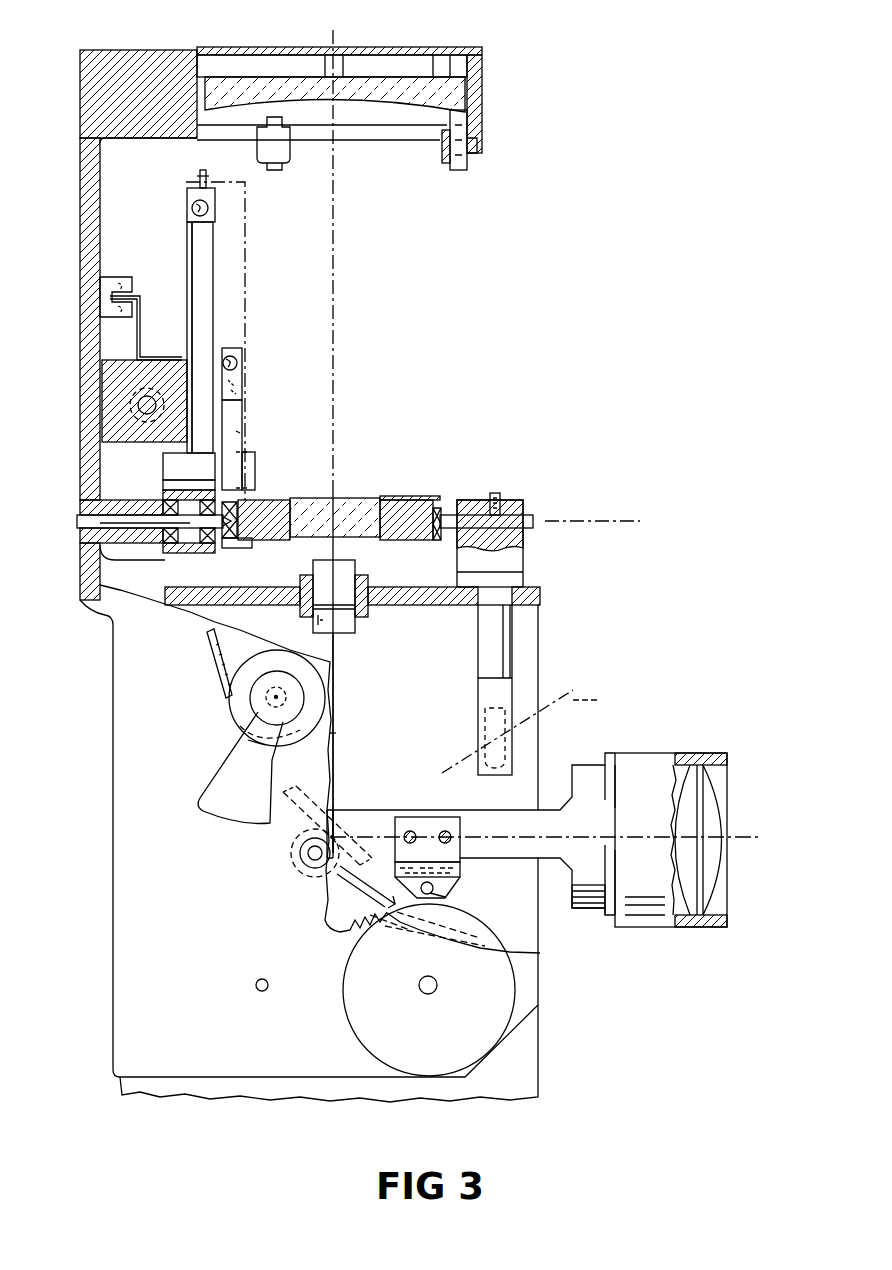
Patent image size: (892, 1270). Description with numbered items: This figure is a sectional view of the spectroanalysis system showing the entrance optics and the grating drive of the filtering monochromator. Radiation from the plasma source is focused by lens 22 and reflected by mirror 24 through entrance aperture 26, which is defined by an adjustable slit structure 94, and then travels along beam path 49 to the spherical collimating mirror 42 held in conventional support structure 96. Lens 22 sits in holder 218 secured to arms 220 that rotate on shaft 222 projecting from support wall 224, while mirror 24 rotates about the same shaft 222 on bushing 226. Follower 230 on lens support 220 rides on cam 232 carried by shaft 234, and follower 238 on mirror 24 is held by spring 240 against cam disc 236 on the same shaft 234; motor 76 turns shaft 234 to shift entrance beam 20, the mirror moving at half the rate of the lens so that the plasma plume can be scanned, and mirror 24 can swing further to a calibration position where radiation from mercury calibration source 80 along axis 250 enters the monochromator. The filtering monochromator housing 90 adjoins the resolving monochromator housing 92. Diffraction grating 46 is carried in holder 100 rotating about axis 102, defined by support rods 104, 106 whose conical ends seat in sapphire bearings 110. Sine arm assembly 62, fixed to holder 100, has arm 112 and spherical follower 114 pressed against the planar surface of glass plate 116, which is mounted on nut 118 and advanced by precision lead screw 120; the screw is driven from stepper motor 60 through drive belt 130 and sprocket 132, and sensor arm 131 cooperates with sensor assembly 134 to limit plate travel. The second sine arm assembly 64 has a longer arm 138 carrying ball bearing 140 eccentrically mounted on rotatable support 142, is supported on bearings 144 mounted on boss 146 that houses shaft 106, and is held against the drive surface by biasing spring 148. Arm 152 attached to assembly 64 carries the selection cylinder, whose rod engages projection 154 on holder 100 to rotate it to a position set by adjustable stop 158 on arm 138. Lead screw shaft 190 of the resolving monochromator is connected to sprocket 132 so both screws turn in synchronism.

The entrance beam 20 is at (735, 837).
The lens 22 is at (710, 860).
The mirror 24 is at (380, 880).
The entrance aperture 26 is at (340, 612).
The spherical collimating mirror 42 is at (375, 78).
The diffraction grating 46 is at (355, 508).
The beam path 49 is at (335, 320).
The stepper motor 60 is at (212, 805).
The sine arm assembly 62 is at (240, 433).
The second sine arm assembly 64 is at (215, 283).
The motor 76 is at (390, 1055).
The mercury calibration source 80 is at (485, 725).
The housing 90 is at (80, 208).
The housing 92 is at (540, 1078).
The adjustable slit structure 94 is at (365, 610).
The support structure 96 is at (480, 122).
The grating holder 100 is at (410, 506).
The grating axis 102 is at (585, 521).
The support rod 104 is at (530, 515).
The support rod 106 is at (77, 520).
The sapphire bearing 110 is at (230, 538).
The arm 112 is at (233, 422).
The spherical follower 114 is at (240, 360).
The glass plate 116 is at (247, 242).
The nut 118 is at (126, 362).
The precision lead screw 120 is at (147, 408).
The drive belt 130 is at (215, 660).
The sensor arm 131 is at (141, 296).
The sprocket 132 is at (240, 715).
The sensor assembly 134 is at (110, 277).
The arm 138 is at (202, 237).
The ball bearing 140 is at (213, 205).
The rotatable support 142 is at (208, 210).
The bearings 144 is at (178, 545).
The boss 146 is at (140, 500).
The biasing spring 148 is at (200, 176).
The arm 152 is at (255, 470).
The projection 154 is at (252, 546).
The adjustable stop 158 is at (240, 385).
The lead screw shaft 190 is at (336, 733).
The holder 218 is at (660, 928).
The arms 220 is at (497, 815).
The shaft 222 is at (310, 856).
The support wall 224 is at (336, 777).
The bushing 226 is at (290, 845).
The follower 230 is at (445, 895).
The cam 232 is at (470, 935).
The shaft 234 is at (425, 988).
The cam disc 236 is at (490, 948).
The follower 238 is at (445, 928).
The spring 240 is at (330, 922).
The axis 250 is at (583, 705).